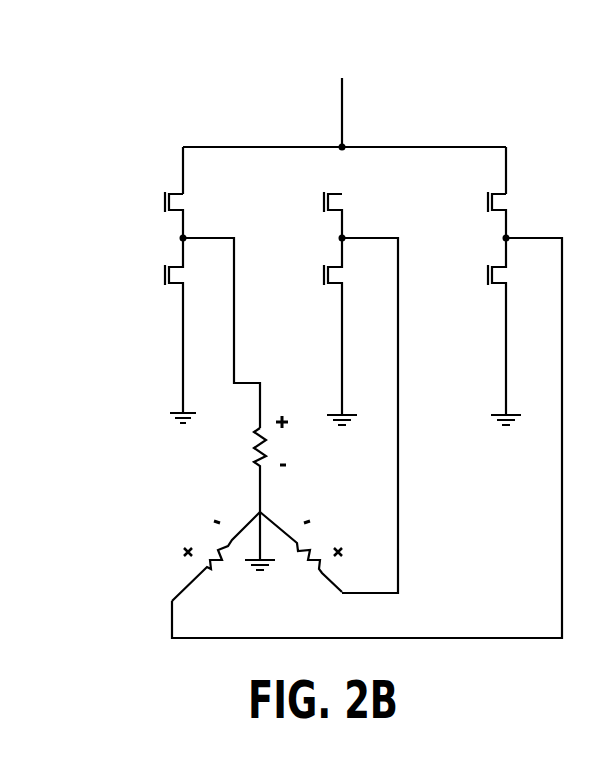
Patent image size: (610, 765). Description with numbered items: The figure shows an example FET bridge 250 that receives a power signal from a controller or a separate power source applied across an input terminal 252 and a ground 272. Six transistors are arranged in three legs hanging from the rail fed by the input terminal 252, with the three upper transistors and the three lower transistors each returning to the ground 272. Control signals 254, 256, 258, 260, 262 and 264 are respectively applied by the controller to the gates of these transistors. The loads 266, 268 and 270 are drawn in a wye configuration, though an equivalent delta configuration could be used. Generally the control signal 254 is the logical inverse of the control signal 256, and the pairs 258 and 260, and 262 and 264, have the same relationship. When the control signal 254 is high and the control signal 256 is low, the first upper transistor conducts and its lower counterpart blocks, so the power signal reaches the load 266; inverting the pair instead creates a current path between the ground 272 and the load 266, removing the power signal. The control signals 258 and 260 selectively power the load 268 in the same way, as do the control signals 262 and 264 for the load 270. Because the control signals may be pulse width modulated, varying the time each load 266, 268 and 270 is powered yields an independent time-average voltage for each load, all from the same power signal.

The FET bridge 250 is at (518, 121).
The input terminal 252 is at (342, 102).
The control signal 254 is at (152, 202).
The control signal 256 is at (152, 275).
The control signal 258 is at (311, 202).
The control signal 260 is at (311, 275).
The control signal 262 is at (475, 202).
The control signal 264 is at (475, 275).
The load 266 is at (253, 455).
The load 268 is at (316, 540).
The load 270 is at (207, 537).
The ground 272 is at (181, 380).